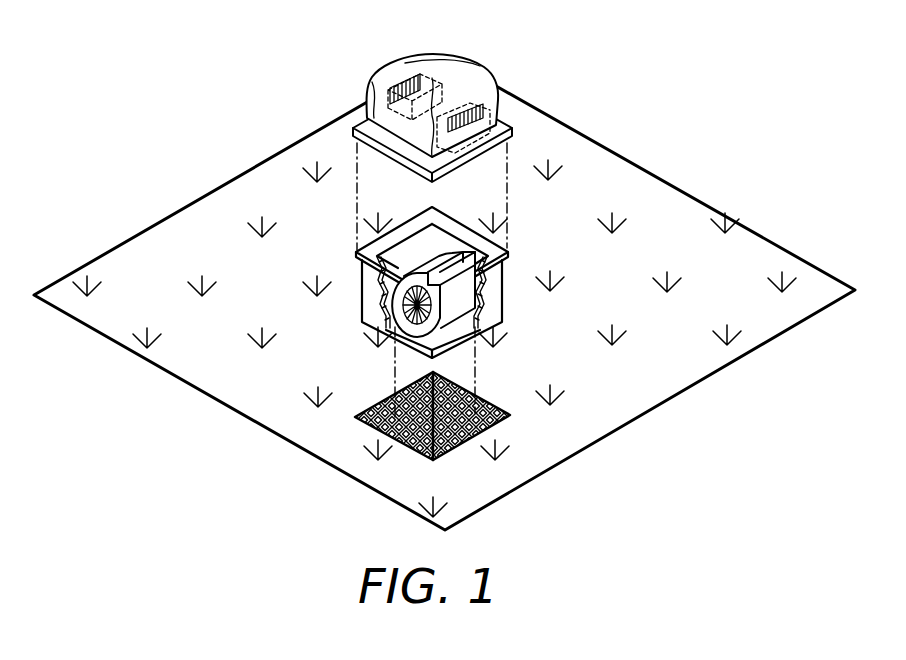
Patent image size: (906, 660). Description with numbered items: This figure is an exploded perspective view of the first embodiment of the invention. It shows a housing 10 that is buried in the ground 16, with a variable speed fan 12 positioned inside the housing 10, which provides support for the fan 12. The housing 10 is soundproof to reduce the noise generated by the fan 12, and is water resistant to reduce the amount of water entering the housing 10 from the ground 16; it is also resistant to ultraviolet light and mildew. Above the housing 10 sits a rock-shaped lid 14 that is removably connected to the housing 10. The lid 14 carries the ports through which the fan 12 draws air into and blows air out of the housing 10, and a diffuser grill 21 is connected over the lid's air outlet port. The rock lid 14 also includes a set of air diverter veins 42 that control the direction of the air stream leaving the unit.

The housing 10 is at (505, 273).
The variable speed fan 12 is at (467, 287).
The rock-shaped lid 14 is at (493, 74).
The ground 16 is at (337, 342).
The diffuser grill 21 is at (483, 114).
The air diverter veins 42 is at (477, 117).